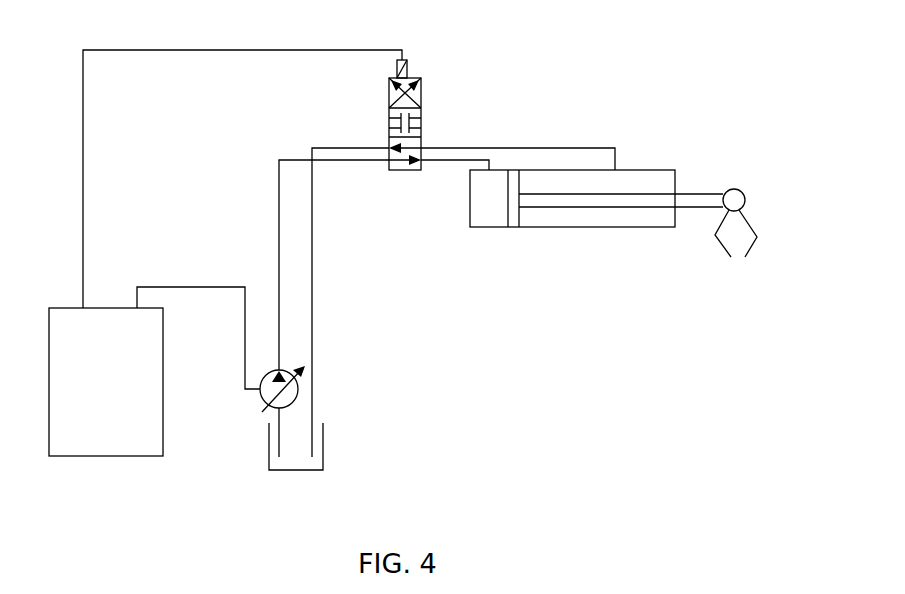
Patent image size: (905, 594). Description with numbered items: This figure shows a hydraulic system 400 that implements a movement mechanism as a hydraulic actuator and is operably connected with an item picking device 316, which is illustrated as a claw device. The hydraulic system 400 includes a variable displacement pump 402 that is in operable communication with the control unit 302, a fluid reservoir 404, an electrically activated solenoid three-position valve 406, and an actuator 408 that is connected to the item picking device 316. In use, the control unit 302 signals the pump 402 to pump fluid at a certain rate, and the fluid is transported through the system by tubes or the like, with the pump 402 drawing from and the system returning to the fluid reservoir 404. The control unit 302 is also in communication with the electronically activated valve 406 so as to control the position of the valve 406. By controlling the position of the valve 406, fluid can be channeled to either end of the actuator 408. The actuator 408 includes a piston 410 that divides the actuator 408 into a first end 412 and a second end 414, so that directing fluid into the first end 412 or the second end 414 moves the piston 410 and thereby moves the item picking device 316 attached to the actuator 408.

The hydraulic system 400 is at (494, 104).
The electrically activated solenoid three-position valve 406 is at (413, 77).
The actuator 408 is at (650, 170).
The piston 410 is at (633, 205).
The first end 412 is at (493, 217).
The second end 414 is at (566, 217).
The item picking device 316 is at (745, 226).
The control unit 302 is at (106, 382).
The variable displacement pump 402 is at (259, 397).
The fluid reservoir 404 is at (323, 443).